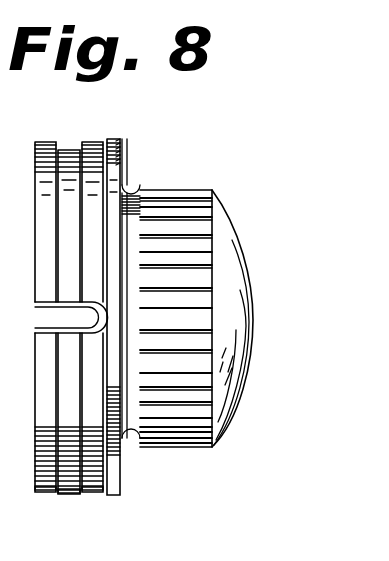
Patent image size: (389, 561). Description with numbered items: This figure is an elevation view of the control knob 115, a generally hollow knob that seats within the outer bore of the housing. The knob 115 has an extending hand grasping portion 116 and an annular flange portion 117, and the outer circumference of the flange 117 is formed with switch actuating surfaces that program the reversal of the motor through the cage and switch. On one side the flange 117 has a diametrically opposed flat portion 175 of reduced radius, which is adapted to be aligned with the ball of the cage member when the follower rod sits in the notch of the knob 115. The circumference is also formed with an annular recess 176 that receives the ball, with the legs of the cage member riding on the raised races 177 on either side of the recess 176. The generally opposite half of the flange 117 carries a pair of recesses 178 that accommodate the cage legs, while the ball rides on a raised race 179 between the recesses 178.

The control knob 115 is at (232, 413).
The hand grasping portion 116 is at (197, 191).
The annular flange portion 117 is at (40, 250).
The flat portion 175 is at (50, 320).
The annular recess 176 is at (67, 148).
The raised races 177 is at (41, 140).
The recesses 178 is at (52, 492).
The raised race 179 is at (68, 495).